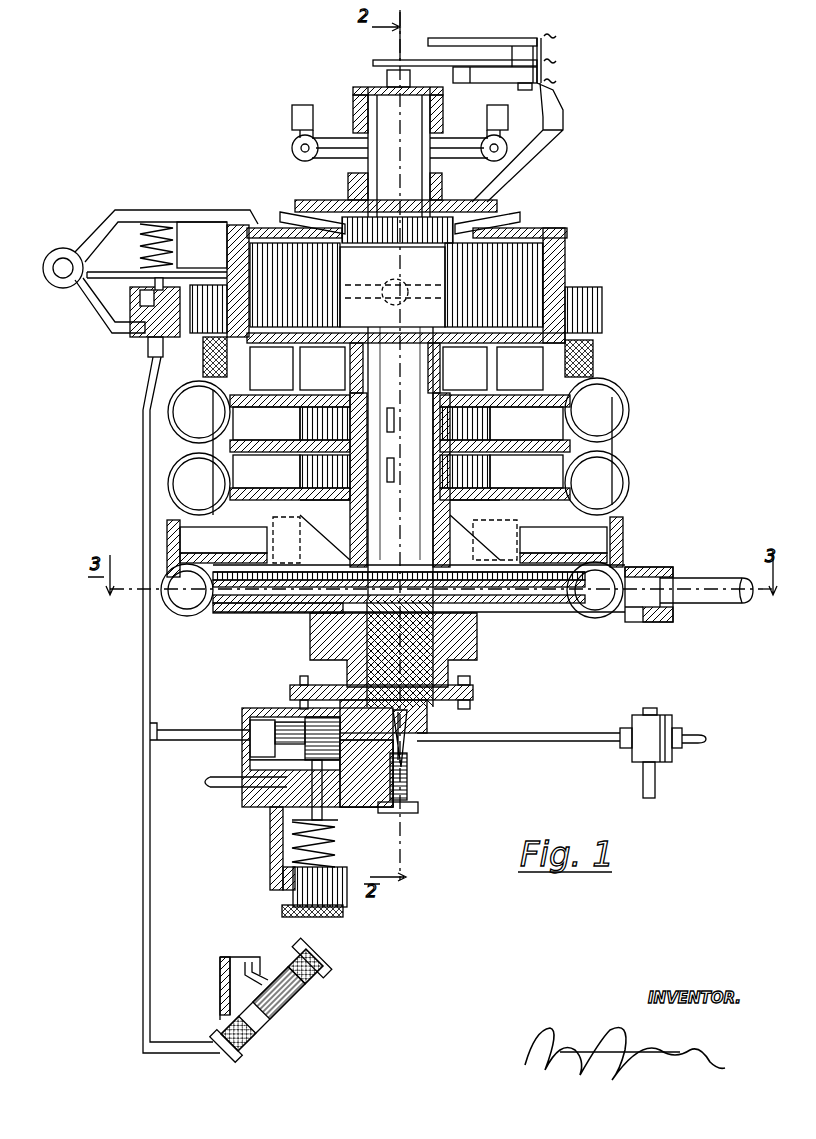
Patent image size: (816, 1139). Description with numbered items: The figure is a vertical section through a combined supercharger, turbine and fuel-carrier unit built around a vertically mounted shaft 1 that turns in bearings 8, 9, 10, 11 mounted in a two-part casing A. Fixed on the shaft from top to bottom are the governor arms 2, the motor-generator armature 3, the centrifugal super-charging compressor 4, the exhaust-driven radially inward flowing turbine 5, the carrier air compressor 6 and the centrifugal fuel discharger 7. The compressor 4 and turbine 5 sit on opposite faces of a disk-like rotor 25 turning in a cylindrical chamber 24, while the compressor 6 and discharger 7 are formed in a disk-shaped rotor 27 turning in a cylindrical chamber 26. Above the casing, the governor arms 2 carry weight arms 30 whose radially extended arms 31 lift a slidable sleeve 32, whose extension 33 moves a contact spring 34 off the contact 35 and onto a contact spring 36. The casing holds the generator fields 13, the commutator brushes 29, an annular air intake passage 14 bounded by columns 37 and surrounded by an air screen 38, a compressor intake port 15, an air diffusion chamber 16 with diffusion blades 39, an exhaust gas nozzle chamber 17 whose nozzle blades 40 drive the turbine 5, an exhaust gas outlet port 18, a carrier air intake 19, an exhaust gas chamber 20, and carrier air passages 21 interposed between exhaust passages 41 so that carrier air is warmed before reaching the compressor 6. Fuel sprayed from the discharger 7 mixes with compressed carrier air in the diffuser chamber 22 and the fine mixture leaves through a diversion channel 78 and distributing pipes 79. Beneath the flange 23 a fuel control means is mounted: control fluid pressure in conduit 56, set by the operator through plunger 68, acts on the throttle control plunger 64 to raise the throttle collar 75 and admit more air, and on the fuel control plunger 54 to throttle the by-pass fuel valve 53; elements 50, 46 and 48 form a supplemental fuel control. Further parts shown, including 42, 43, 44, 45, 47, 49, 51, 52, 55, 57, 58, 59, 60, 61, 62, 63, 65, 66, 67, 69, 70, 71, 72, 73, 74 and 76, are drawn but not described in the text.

The shaft 1 is at (400, 343).
The governor arms 2 is at (292, 152).
The electric generator (and motor) armature 3 is at (396, 272).
The centrifugal super-charging compressor 4 is at (400, 423).
The exhaust driven radially inward flowing turbine 5 is at (400, 477).
The carrier air compressor 6 is at (195, 553).
The centrifugal fuel discharger 7 is at (205, 620).
The bearing 8 is at (348, 186).
The bearing 9 is at (440, 375).
The bearing 10 is at (445, 552).
The bearing 11 is at (478, 652).
The generator (motor) fields 13 is at (520, 245).
The air intake passage 14 is at (396, 316).
The compressor intake port 15 is at (463, 393).
The air diffusion chamber 16 is at (605, 385).
The exhaust gas nozzle chamber 17 is at (600, 480).
The exhaust gas outlet port 18 is at (409, 480).
The carrier air intake 19 is at (610, 512).
The exhaust gas chamber 20 is at (549, 543).
The carrier air passages 21 is at (495, 540).
The carrier air diffuser chamber 22 is at (182, 616).
The flange 23 is at (472, 688).
The cylindrical chamber 24 is at (208, 460).
The disk-like rotor 25 is at (545, 438).
The cylindrical chamber 26 is at (350, 243).
The disk-shaped rotor 27 is at (560, 615).
The commutator brushes 29 is at (490, 222).
The weight arms 30 is at (296, 108).
The radially extended arms 31 is at (330, 128).
The slidable sleeve 32 is at (365, 85).
The extension 33 is at (385, 62).
The contact spring 34 is at (392, 46).
The contact 35 is at (475, 83).
The contact spring 36 is at (435, 38).
The columns 37 is at (330, 372).
The air screen 38 is at (593, 348).
The diffusion blades 39 is at (224, 412).
The nozzle forming blades 40 is at (574, 478).
The exhaust gas passages 41 is at (286, 540).
The body 42 is at (340, 650).
The body 43 is at (440, 718).
The rod 44 is at (470, 745).
The bolt 45 is at (300, 680).
The fuel control element 46 is at (420, 770).
The nut 47 is at (420, 808).
The fuel control element 48 is at (435, 722).
The rod 49 is at (574, 742).
The fuel control element 50 is at (672, 715).
The stem 51 is at (658, 778).
The screw 52 is at (395, 800).
The by-pass fuel valve 53 is at (335, 790).
The fuel control plunger 54 is at (258, 710).
The spool 55 is at (250, 750).
The control fluid conduit 56 is at (143, 752).
The rod 57 is at (205, 781).
The sleeve 58 is at (270, 812).
The spring 59 is at (290, 838).
The nut 60 is at (340, 900).
The sleeve 61 is at (270, 878).
The port 62 is at (210, 790).
The valve 63 is at (128, 300).
The throttle control plunger 64 is at (140, 343).
The block 65 is at (203, 268).
The spring 66 is at (122, 265).
The cylinder 67 is at (270, 1015).
The plunger 68 is at (316, 955).
The piston 69 is at (312, 983).
The rod 70 is at (322, 968).
The plunger 71 is at (250, 965).
The bracket 72 is at (225, 985).
The pivot 73 is at (58, 255).
The pin 74 is at (392, 292).
The throttle collar 75 is at (602, 300).
The lever 76 is at (150, 227).
The diversion channel 78 is at (648, 620).
The distributing pipes 79 is at (695, 578).
The casing A is at (567, 234).